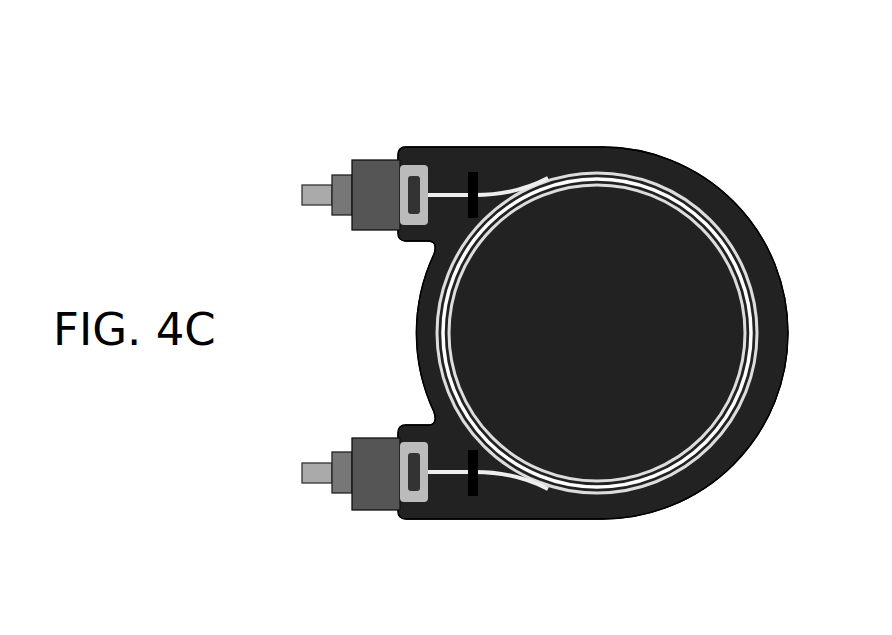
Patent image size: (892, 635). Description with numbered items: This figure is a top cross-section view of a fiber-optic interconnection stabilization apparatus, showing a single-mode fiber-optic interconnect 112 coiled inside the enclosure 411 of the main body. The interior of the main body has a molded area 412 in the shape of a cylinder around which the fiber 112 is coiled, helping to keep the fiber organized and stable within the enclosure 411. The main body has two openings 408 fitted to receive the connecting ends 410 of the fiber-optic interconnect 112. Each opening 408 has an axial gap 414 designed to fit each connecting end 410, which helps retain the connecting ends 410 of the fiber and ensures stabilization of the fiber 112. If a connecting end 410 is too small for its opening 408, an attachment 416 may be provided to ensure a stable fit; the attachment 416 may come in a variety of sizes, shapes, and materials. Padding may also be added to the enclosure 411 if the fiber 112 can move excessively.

The opening 408 is at (398, 150).
The connecting end 410 is at (350, 172).
The enclosure 411 is at (422, 392).
The molded area 412 is at (415, 308).
The axial gap 414 is at (388, 100).
The attachment 416 is at (410, 520).
The fiber-optic interconnect 112 is at (678, 168).